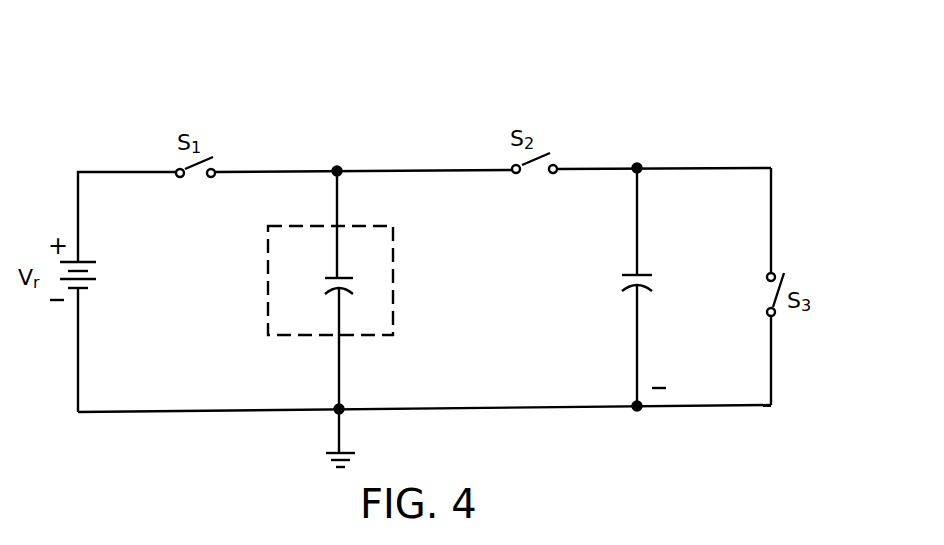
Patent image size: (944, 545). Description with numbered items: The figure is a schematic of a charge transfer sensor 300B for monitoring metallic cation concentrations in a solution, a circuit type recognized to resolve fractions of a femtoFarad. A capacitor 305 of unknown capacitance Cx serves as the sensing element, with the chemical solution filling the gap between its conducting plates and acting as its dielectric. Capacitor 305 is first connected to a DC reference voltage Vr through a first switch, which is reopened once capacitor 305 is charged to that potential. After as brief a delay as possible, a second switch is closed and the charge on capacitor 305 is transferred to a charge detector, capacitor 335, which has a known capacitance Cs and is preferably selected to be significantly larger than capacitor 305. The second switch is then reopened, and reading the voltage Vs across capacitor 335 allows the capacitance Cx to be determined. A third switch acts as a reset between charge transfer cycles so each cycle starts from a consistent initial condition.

The sensor 300B is at (148, 112).
The capacitor 305 is at (395, 284).
The capacitor 335 is at (626, 270).